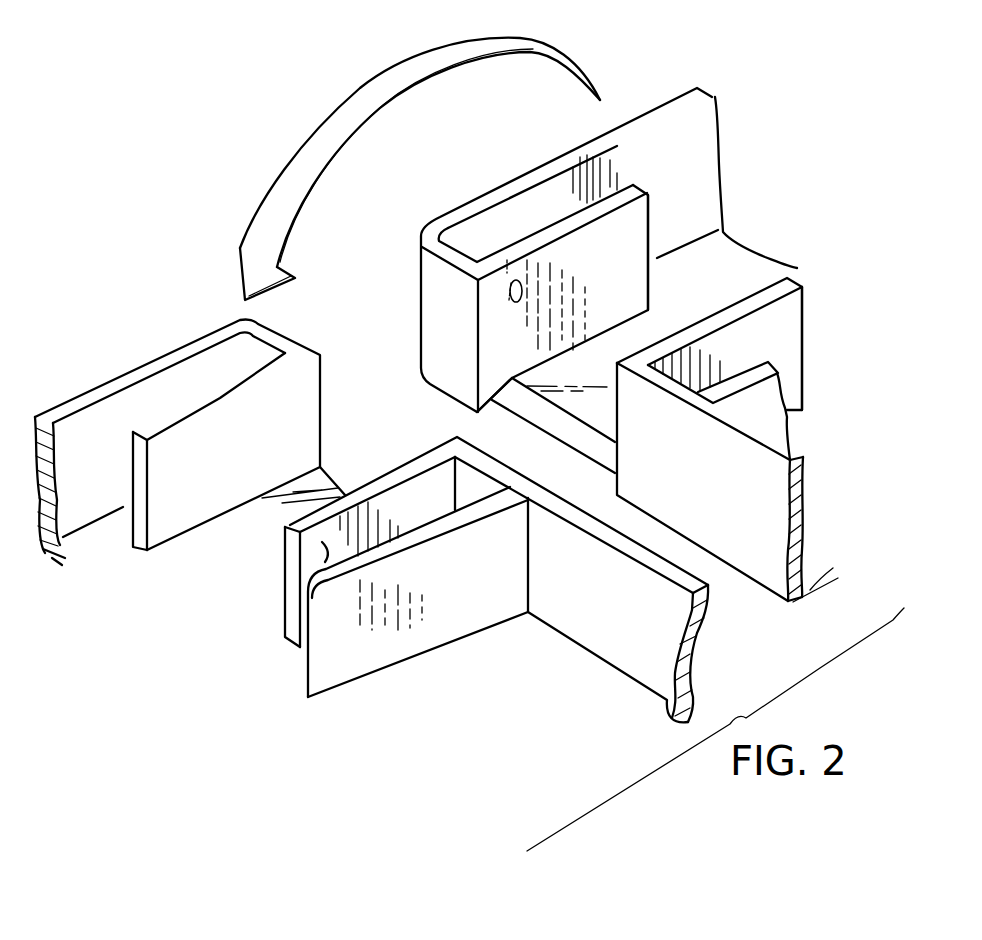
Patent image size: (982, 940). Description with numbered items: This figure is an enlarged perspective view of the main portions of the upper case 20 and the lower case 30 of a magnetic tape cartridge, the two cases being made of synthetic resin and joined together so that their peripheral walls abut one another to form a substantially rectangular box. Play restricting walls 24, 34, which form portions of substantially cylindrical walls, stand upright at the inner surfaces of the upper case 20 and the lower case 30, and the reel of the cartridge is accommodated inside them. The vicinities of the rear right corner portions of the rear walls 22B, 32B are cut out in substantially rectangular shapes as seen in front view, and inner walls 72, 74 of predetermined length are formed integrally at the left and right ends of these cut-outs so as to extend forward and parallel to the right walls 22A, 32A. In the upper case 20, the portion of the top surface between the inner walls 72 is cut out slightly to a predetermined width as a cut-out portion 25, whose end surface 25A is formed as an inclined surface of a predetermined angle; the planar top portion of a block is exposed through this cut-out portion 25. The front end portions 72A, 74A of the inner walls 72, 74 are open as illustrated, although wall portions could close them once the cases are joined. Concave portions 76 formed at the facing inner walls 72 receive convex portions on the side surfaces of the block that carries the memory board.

The upper case 20 is at (646, 98).
The right wall 22A is at (678, 143).
The rear wall 22B is at (748, 500).
The play restricting wall 24 is at (757, 414).
The cut-out portion 25 is at (555, 447).
The end surface 25A is at (537, 412).
The inner walls 72 is at (617, 273).
The front end portions 72A is at (653, 217).
The concave portions 76 is at (510, 300).
The lower case 30 is at (123, 363).
The right wall 32A is at (87, 497).
The rear wall 32B is at (637, 637).
The play restricting wall 34 is at (377, 657).
The inner walls 74 is at (180, 497).
The front end portions 74A is at (138, 522).